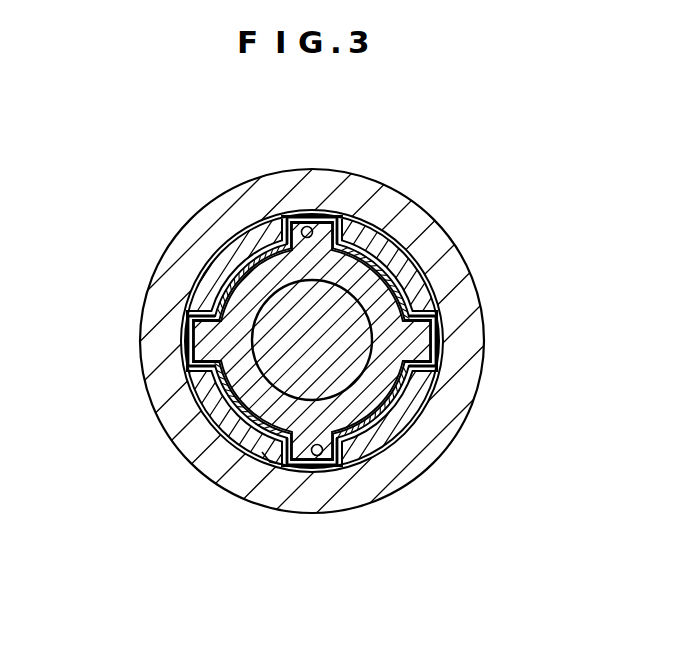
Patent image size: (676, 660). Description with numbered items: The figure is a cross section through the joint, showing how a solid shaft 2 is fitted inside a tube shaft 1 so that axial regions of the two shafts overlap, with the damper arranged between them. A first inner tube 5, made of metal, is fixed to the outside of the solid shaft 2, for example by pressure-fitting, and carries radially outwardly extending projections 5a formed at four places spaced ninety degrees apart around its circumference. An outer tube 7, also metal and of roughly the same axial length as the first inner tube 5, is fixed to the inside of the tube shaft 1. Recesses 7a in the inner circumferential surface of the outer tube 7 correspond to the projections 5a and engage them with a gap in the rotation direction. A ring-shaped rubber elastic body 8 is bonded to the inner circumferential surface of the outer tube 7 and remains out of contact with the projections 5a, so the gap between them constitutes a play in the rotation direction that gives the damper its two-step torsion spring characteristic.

The tube shaft 1 is at (382, 480).
The solid shaft 2 is at (420, 268).
The first inner tube 5 is at (427, 405).
The projections 5a is at (438, 333).
The outer tube 7 is at (235, 243).
The recesses 7a is at (308, 226).
The elastic body 8 is at (255, 466).